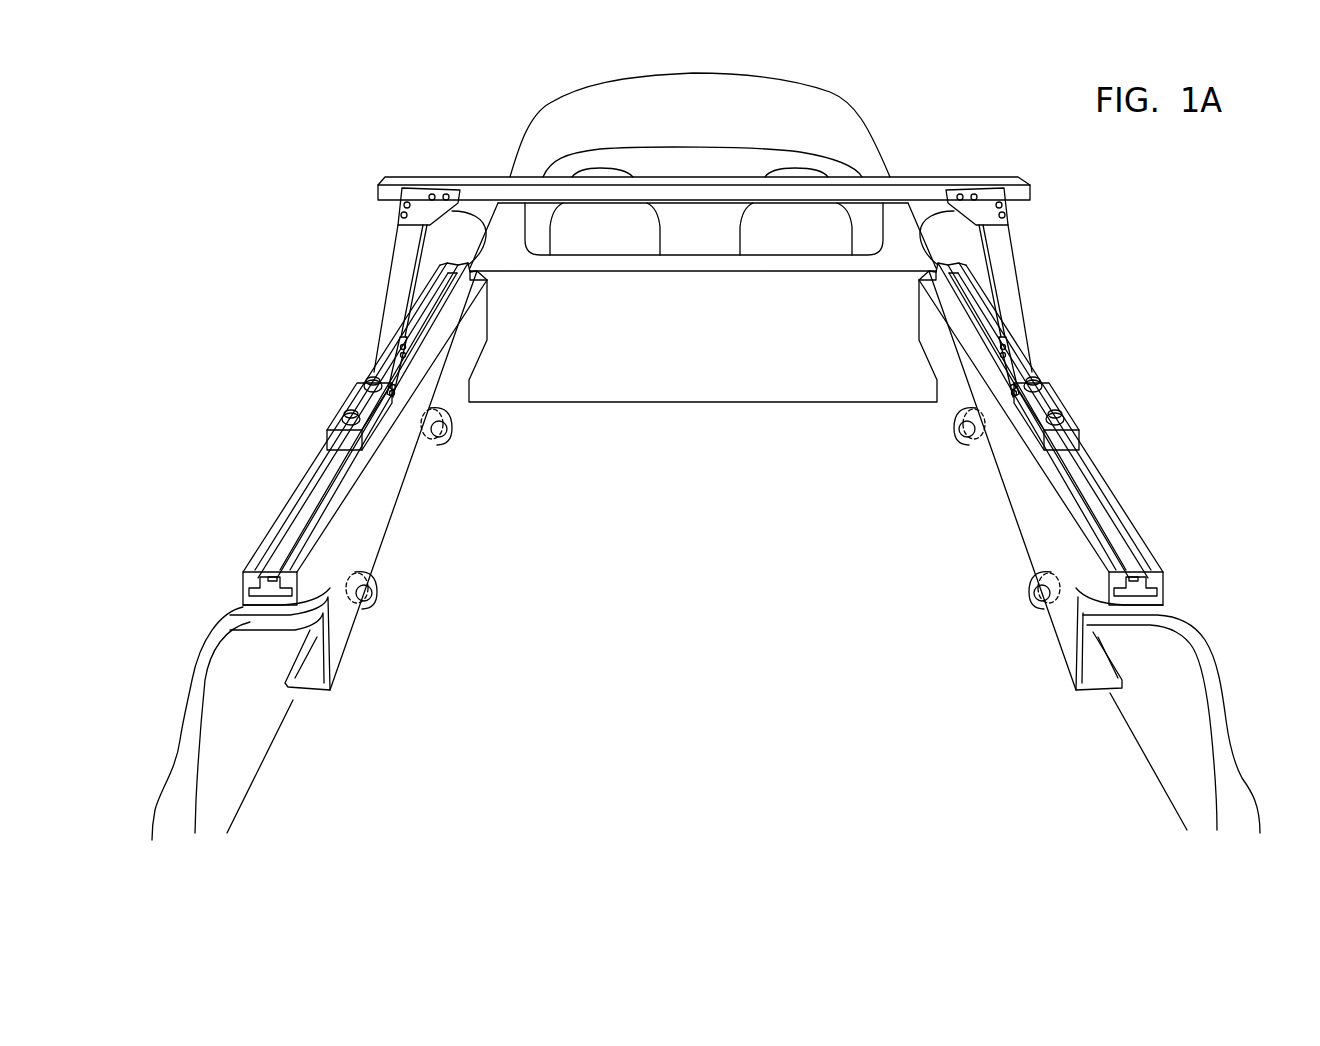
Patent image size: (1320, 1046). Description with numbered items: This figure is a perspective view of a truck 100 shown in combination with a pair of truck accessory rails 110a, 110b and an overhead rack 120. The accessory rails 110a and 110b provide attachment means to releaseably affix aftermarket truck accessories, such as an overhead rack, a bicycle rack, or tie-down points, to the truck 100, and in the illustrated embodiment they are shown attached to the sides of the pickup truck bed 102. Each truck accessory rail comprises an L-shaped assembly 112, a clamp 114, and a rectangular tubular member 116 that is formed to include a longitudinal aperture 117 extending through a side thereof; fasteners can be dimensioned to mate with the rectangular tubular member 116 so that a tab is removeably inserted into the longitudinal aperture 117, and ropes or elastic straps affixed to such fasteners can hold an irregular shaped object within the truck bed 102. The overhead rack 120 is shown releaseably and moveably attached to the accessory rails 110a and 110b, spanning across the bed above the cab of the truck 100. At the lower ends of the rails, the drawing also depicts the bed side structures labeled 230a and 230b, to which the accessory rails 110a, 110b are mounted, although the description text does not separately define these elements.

The truck 100 is at (458, 112).
The truck bed 102 is at (726, 637).
The truck accessory rail 110a is at (308, 455).
The truck accessory rail 110b is at (1100, 455).
The L-shaped assembly 112 is at (430, 486).
The clamp 114 is at (392, 580).
The rectangular tubular member 116 is at (249, 570).
The longitudinal aperture 117 is at (290, 548).
The overhead rack 120 is at (376, 255).
The first bed rail 230a is at (212, 630).
The second bed rail 230b is at (1200, 630).